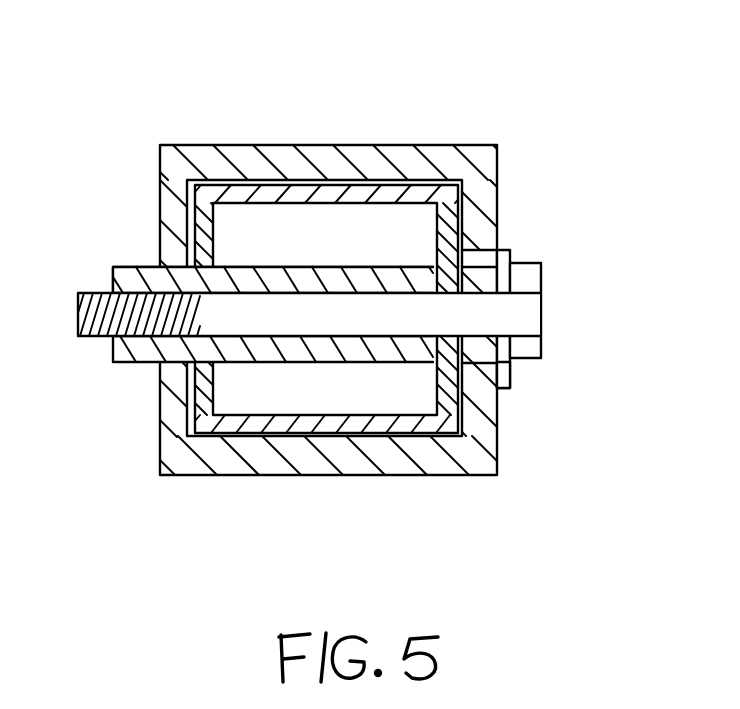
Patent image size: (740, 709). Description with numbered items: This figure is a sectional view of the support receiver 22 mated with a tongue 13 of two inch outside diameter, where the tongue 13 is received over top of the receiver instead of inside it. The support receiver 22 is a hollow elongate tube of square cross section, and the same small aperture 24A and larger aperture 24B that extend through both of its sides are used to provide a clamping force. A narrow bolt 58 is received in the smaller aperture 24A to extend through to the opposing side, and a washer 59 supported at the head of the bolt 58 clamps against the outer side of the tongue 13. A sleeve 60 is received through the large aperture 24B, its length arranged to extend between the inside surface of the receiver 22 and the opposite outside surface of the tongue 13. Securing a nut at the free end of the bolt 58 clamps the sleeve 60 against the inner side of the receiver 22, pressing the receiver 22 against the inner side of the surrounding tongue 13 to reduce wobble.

The tongue 13 is at (395, 155).
The support receiver 22 is at (309, 207).
The small aperture 24A is at (508, 248).
The large aperture 24B is at (205, 255).
The bolt 58 is at (543, 267).
The washer 59 is at (512, 372).
The sleeve 60 is at (150, 363).